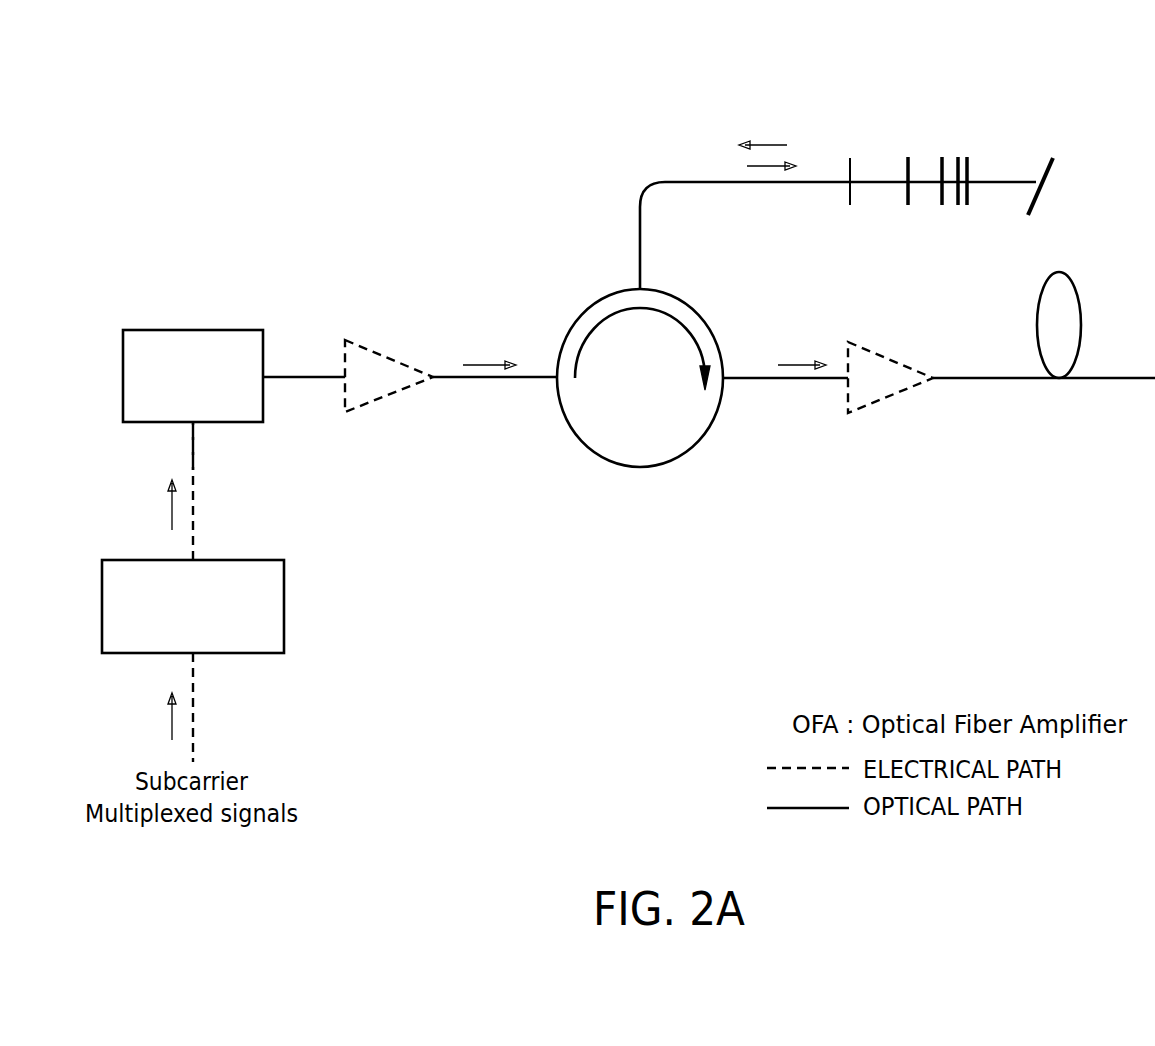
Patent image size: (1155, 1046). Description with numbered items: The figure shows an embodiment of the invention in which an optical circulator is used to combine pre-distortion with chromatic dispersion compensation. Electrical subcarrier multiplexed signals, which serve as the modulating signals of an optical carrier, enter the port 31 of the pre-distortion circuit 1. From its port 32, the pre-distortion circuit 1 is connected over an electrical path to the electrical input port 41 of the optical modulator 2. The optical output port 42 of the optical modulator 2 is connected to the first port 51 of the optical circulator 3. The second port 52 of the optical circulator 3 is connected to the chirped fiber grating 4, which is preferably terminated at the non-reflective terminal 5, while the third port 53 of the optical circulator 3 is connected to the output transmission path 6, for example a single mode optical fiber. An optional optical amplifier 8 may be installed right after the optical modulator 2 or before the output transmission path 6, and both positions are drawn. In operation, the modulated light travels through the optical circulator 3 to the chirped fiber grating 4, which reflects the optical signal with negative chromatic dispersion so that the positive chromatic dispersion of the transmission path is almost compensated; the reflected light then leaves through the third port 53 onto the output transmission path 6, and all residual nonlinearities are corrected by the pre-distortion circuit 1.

The pre-distortion circuit 1 is at (128, 560).
The optical modulator 2 is at (203, 330).
The optical circulator 3 is at (588, 447).
The chirped fiber grating 4 is at (912, 146).
The non-reflective terminal 5 is at (1048, 183).
The output transmission path 6 is at (993, 382).
The optical amplifier 8 is at (380, 352).
The port 31 is at (197, 707).
The port 32 is at (197, 491).
The electrical input port 41 is at (210, 446).
The optical output port 42 is at (304, 358).
The first port 51 is at (495, 357).
The second port 52 is at (725, 215).
The third port 53 is at (785, 358).